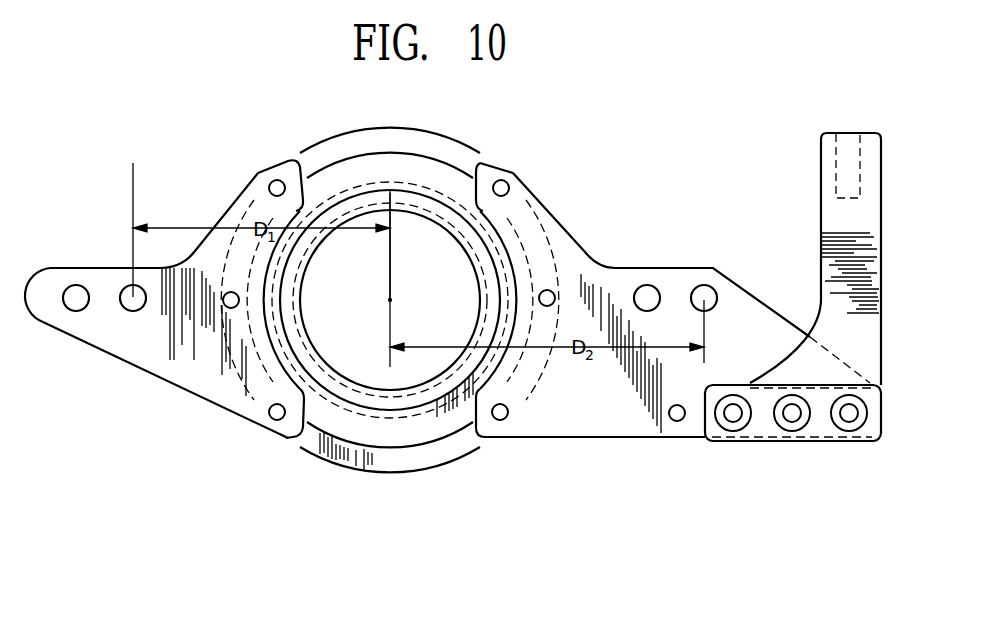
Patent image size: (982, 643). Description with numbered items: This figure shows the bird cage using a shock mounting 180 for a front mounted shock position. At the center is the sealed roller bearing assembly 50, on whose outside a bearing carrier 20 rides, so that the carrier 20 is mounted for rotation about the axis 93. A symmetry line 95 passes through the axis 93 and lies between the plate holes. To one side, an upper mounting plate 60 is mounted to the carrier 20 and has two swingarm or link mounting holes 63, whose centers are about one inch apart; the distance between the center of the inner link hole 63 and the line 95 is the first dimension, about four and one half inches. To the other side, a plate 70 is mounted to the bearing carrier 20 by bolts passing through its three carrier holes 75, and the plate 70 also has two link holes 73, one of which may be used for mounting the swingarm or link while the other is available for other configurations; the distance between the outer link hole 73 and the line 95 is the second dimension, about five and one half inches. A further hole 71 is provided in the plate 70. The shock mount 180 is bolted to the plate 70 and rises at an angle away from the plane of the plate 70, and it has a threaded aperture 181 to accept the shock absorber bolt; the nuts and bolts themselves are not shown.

The bearing carrier 20 is at (460, 448).
The sealed roller bearing assembly 50 is at (403, 437).
The upper mounting plate 60 is at (158, 360).
The link mounting hole 63 is at (131, 287).
The plate 70 is at (575, 280).
The hole 71 is at (681, 421).
The link hole 73 is at (704, 285).
The carrier hole 75 is at (507, 189).
The axis 93 is at (392, 299).
The symmetry line 95 is at (390, 270).
The shock mounting 180 is at (821, 220).
The threaded aperture 181 is at (838, 156).